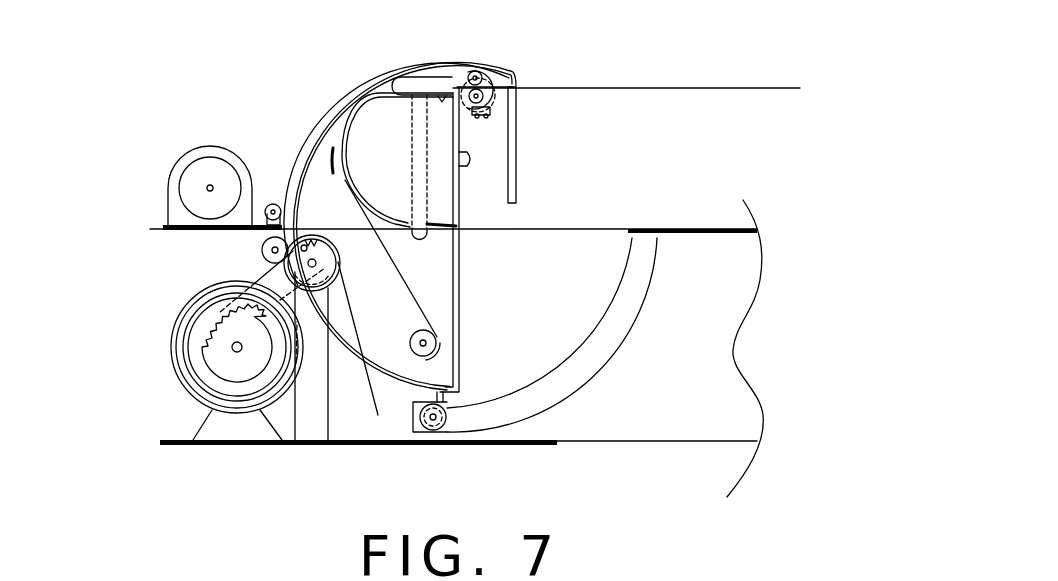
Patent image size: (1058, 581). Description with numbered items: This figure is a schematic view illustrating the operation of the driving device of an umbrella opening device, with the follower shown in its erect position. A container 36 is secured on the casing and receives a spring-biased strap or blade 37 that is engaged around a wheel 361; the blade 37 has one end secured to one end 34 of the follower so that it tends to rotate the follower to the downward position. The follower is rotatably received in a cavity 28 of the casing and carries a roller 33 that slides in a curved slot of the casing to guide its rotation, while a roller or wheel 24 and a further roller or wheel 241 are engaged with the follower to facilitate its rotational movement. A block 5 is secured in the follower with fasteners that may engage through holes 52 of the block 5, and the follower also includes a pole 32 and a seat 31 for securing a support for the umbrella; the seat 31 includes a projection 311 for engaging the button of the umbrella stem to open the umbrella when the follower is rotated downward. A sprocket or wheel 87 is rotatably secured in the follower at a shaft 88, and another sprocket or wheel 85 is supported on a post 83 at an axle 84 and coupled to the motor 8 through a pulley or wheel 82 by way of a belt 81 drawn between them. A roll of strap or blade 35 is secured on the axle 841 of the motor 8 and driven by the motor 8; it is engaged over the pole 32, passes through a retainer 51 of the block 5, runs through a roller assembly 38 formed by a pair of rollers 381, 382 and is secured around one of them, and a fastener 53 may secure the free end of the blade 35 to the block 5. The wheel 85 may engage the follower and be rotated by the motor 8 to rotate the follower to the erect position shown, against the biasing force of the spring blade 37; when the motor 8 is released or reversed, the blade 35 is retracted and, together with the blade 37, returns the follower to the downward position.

The block 5 is at (399, 124).
The motor 8 is at (190, 390).
The roller or wheel 24 is at (262, 251).
The cavity 28 is at (607, 250).
The seat 31 is at (515, 172).
The pole 32 is at (437, 343).
The roller 33 is at (440, 428).
The end of the follower 34 is at (443, 97).
The roll of strap or blade 35 is at (433, 312).
The container 36 is at (207, 152).
The spring-biased strap or blade 37 is at (380, 77).
The feed roller assembly 38 is at (489, 80).
The retainer 51 is at (330, 150).
The holes 52 is at (456, 226).
The fastener 53 is at (433, 85).
The belt 81 is at (255, 280).
The pulley or wheel 82 is at (250, 380).
The post 83 is at (313, 427).
The axle 84 is at (316, 264).
The sprocket or wheel 85 is at (378, 415).
The sprocket or wheel 87 is at (491, 113).
The shaft 88 is at (484, 96).
The roller or wheel 241 is at (280, 240).
The projection 311 is at (470, 163).
The wheel 361 is at (273, 205).
The roller 381 is at (522, 88).
The roller 382 is at (490, 68).
The axle of the motor 841 is at (237, 352).